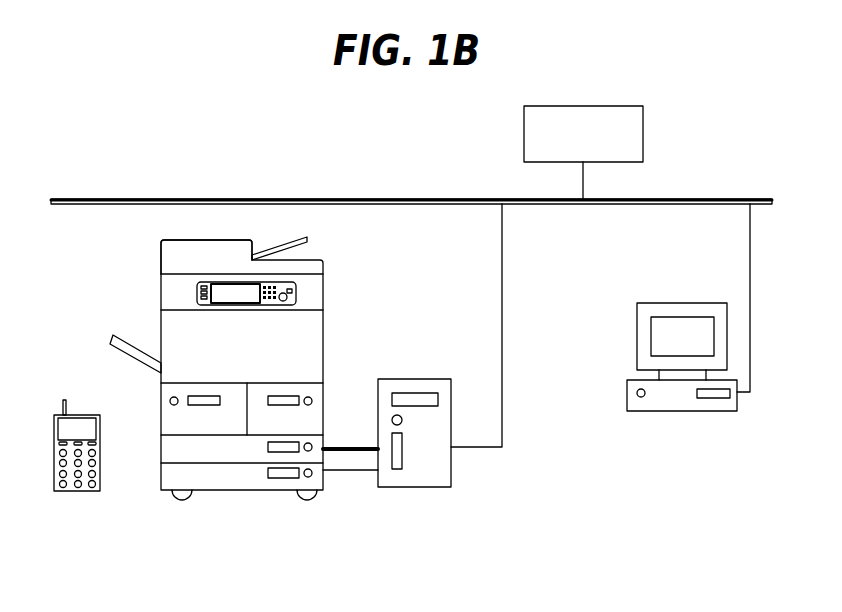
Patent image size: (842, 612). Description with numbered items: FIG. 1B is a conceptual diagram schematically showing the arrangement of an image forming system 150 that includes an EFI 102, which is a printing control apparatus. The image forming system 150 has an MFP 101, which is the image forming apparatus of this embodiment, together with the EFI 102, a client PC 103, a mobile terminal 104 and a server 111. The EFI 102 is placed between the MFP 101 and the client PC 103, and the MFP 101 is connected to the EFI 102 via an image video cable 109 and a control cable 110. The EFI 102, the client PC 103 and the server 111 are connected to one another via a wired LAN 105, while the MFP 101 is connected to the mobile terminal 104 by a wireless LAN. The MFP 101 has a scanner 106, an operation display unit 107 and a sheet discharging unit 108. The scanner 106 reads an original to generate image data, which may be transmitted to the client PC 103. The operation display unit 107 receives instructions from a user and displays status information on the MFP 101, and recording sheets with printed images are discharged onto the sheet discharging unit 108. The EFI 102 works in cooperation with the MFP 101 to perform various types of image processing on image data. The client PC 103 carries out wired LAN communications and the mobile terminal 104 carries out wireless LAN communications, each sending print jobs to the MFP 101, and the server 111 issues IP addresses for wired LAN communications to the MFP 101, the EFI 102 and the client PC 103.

The MFP 101 is at (211, 418).
The EFI 102 is at (420, 487).
The client PC 103 is at (690, 302).
The mobile terminal 104 is at (80, 493).
The wired LAN 105 is at (712, 197).
The scanner 106 is at (160, 254).
The operation display unit 107 is at (297, 293).
The sheet discharging unit 108 is at (110, 341).
The image video cable 109 is at (350, 447).
The control cable 110 is at (350, 470).
The server 111 is at (587, 104).
The image forming system 150 is at (699, 96).